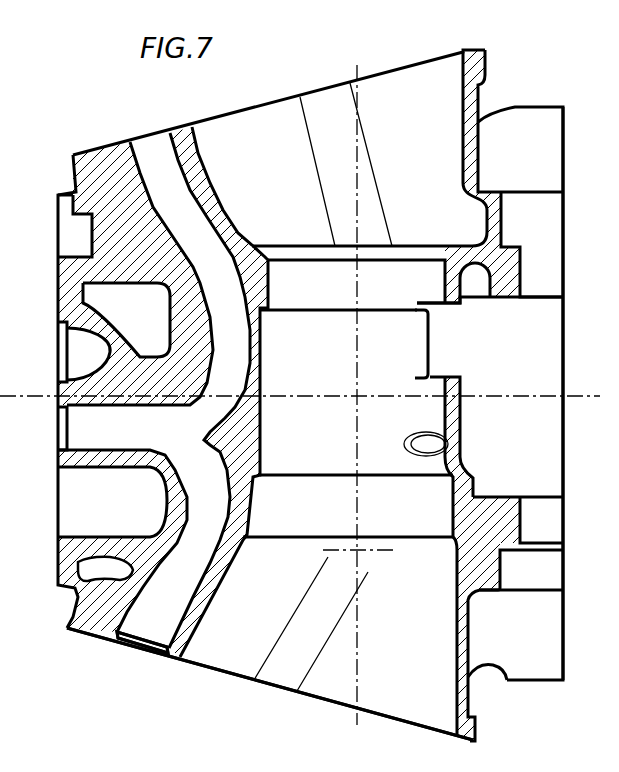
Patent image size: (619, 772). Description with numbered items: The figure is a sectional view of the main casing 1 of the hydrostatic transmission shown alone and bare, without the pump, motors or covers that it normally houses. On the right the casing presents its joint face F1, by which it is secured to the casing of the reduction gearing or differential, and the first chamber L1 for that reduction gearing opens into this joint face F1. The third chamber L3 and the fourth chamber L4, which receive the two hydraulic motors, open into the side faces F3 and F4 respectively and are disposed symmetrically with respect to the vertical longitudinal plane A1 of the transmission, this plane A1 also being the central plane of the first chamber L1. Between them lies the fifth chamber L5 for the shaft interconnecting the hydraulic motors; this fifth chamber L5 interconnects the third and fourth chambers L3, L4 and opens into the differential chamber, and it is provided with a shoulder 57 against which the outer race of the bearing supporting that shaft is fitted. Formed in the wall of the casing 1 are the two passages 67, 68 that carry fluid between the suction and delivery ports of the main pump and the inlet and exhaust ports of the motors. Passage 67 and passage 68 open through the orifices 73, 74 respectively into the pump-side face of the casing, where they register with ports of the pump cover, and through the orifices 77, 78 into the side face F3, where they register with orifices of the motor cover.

The main casing 1 is at (503, 97).
The side face F4 is at (103, 146).
The fourth chamber L4 is at (253, 140).
The passage 67 is at (84, 348).
The orifice 73 is at (57, 358).
The orifice 74 is at (53, 434).
The passage 68 is at (115, 437).
The shoulder 57 is at (266, 483).
The orifice 77 is at (125, 643).
The orifice 78 is at (119, 651).
The third chamber L3 is at (240, 620).
The side face F3 is at (238, 674).
The first chamber L1 is at (507, 332).
The joint face F1 is at (567, 357).
The vertical longitudinal plane A1 is at (300, 387).
The fifth chamber L5 is at (383, 367).